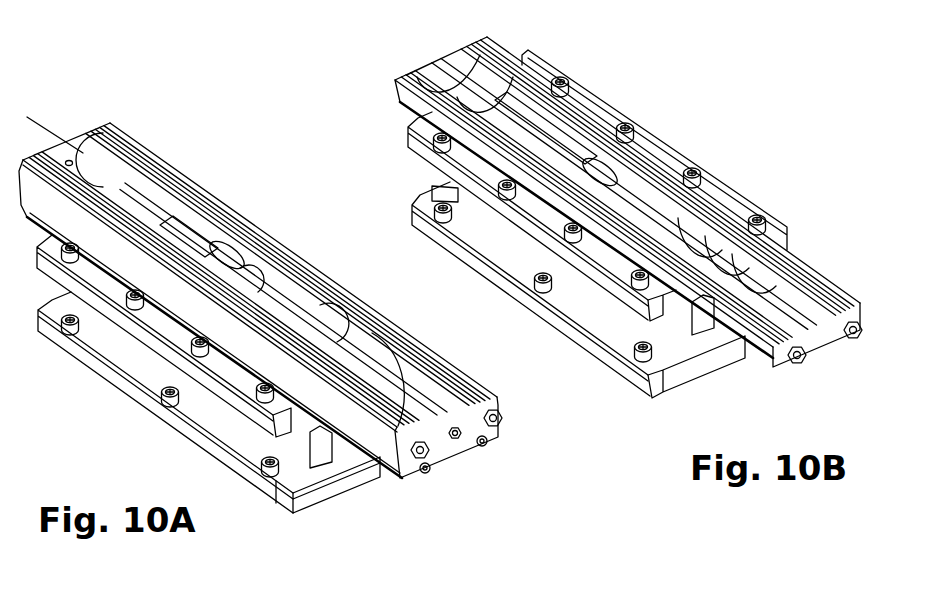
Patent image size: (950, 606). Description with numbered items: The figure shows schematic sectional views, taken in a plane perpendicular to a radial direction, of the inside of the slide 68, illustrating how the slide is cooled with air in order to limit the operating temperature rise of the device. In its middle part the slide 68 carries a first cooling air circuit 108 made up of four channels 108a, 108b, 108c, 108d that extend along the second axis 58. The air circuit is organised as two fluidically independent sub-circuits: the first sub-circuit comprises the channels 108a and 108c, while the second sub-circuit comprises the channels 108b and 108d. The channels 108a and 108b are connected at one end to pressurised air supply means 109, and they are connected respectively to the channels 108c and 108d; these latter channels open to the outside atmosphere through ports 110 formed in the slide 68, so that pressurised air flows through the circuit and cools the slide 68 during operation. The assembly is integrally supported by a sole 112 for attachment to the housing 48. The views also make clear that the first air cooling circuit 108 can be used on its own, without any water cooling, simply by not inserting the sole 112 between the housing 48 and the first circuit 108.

In FIG. 10A, the housing 48 is at (313, 504).
In FIG. 10B, the housing 48 is at (683, 394).
In FIG. 10A, the second axis 58 is at (45, 125).
In FIG. 10A, the slide 68 is at (315, 306).
In FIG. 10B, the slide 68 is at (628, 229).
In FIG. 10A, the first cooling air circuit 108 is at (258, 334).
In FIG. 10B, the first cooling air circuit 108 is at (627, 229).
In FIG. 10A, the channel 108a is at (280, 249).
In FIG. 10A, the channel 108b is at (350, 425).
In FIG. 10B, the channel 108c is at (800, 272).
In FIG. 10B, the channel 108d is at (740, 350).
In FIG. 10A, the pressurised air supply means 109 is at (500, 417).
In FIG. 10B, the pressurised air supply means 109 is at (825, 342).
In FIG. 10A, the ports 110 is at (103, 255).
In FIG. 10B, the ports 110 is at (477, 143).
In FIG. 10A, the sole 112 is at (186, 427).
In FIG. 10B, the sole 112 is at (508, 266).